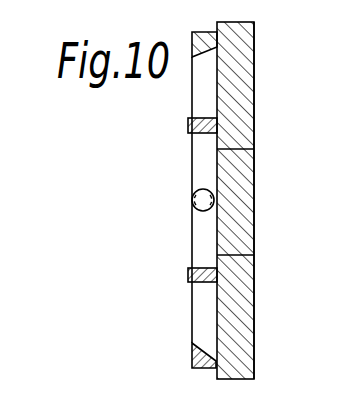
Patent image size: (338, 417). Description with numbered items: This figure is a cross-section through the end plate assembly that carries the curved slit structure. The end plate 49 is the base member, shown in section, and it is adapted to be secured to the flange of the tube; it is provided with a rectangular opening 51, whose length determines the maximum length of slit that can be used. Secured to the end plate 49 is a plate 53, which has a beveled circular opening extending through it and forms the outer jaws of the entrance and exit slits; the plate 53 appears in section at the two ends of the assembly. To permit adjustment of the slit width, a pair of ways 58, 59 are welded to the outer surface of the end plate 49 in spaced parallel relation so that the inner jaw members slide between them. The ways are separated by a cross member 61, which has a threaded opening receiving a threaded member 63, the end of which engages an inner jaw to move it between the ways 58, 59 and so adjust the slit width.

The end plate 49 is at (251, 364).
The opening 51 is at (247, 233).
The plate 53 is at (198, 40).
The way 58 is at (188, 125).
The way 59 is at (189, 281).
The cross member 61 is at (202, 245).
The threaded member 63 is at (193, 207).